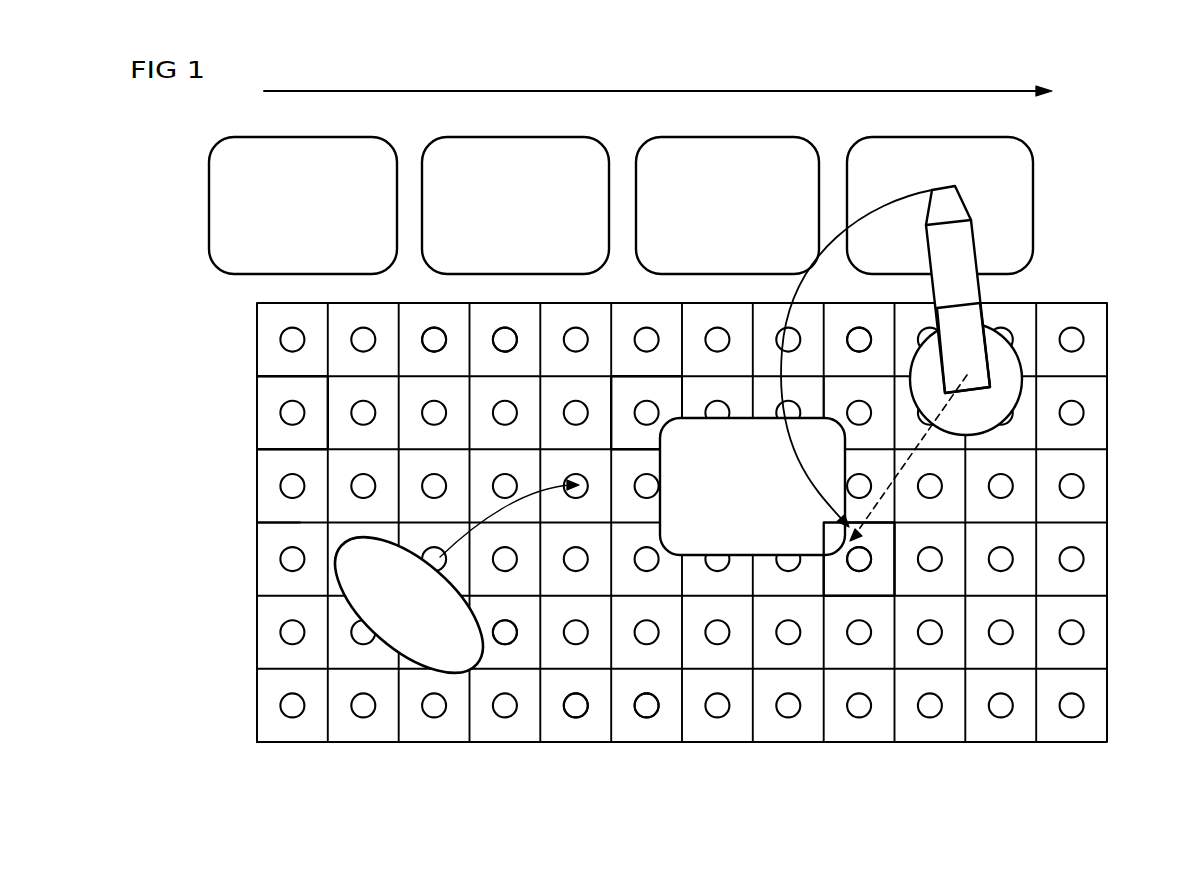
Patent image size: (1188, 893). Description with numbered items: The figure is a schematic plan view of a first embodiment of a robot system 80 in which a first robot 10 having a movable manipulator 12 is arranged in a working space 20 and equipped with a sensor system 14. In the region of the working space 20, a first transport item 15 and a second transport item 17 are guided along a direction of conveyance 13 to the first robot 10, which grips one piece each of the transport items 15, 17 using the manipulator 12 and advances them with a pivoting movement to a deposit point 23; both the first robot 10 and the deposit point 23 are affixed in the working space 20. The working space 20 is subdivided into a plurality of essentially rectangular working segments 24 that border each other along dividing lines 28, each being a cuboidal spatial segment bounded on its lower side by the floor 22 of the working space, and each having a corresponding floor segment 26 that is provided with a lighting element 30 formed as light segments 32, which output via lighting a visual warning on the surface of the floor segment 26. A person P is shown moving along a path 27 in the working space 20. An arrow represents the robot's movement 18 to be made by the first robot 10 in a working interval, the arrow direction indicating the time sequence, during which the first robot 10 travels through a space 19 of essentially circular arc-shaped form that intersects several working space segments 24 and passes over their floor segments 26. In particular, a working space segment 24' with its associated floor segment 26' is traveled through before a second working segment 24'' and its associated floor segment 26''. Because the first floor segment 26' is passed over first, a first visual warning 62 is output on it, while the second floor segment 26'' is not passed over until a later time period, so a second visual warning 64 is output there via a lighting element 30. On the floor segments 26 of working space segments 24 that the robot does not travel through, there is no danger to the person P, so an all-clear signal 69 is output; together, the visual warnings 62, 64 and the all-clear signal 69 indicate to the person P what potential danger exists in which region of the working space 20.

The direction of conveyance 13 is at (622, 90).
The second transport item 17 is at (294, 155).
The first transport item 15 is at (510, 155).
The sensor system 14 is at (1033, 294).
The manipulator 12 is at (972, 288).
The first robot 10 is at (977, 352).
The lighting element 30 is at (432, 328).
The working space segment 24' is at (650, 363).
The first floor segment 26' is at (650, 363).
The first visual warning 62 is at (862, 328).
The space traveled through 19 is at (833, 402).
The robot's movement 18 is at (794, 455).
The robot system 80 is at (172, 357).
The working space 20 is at (205, 470).
The working space segment 24 is at (255, 412).
The floor segment 26 is at (255, 412).
The dividing line 28 is at (265, 525).
The path 27 is at (562, 492).
The floor 22 is at (258, 706).
The person P is at (435, 660).
The all-clear signal 69 is at (508, 645).
The light segment 32 is at (578, 717).
The deposit point 23 is at (740, 535).
The second visual warning 64 is at (858, 571).
The second working segment 24'' is at (1005, 559).
The second floor segment 26'' is at (1005, 559).